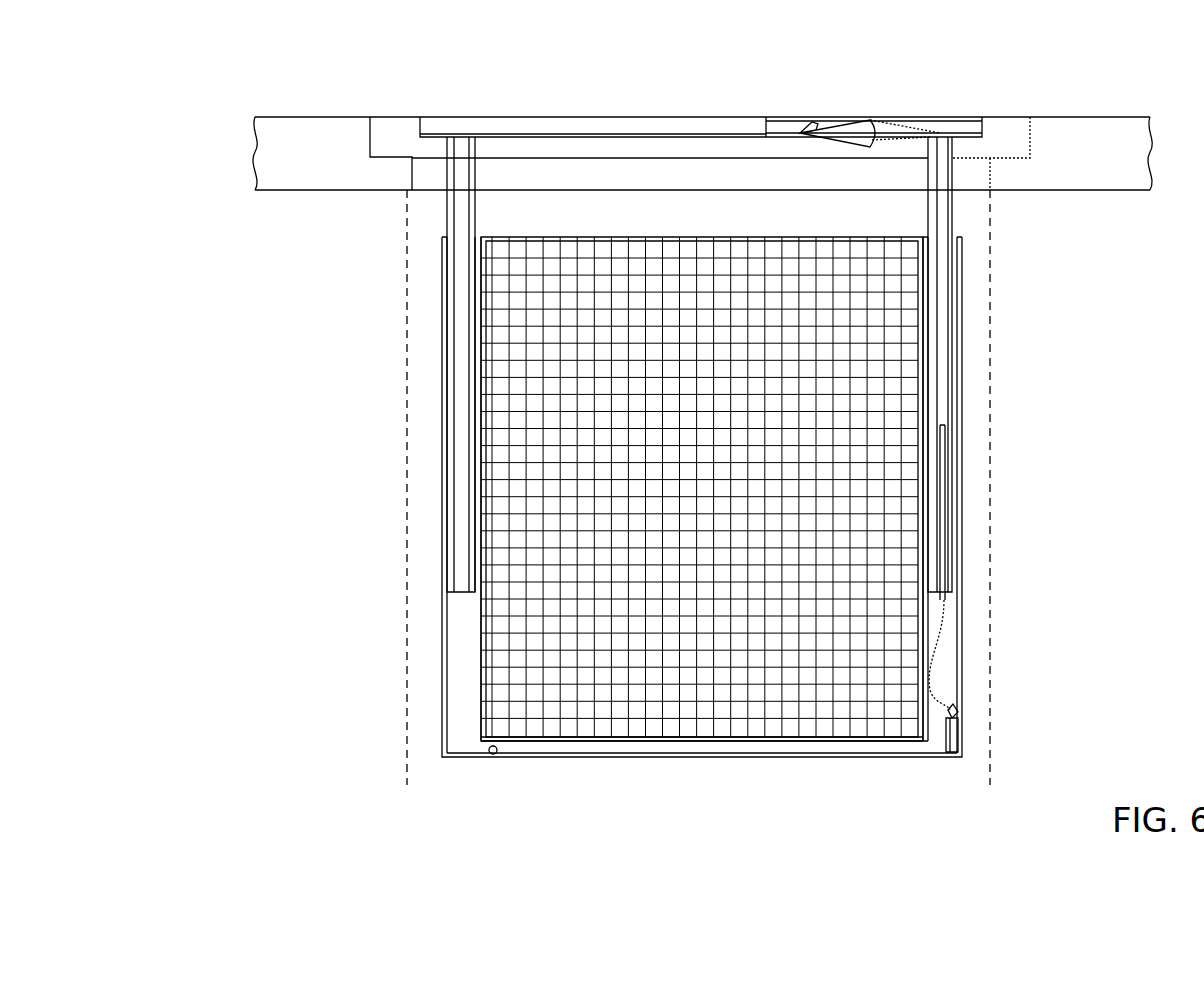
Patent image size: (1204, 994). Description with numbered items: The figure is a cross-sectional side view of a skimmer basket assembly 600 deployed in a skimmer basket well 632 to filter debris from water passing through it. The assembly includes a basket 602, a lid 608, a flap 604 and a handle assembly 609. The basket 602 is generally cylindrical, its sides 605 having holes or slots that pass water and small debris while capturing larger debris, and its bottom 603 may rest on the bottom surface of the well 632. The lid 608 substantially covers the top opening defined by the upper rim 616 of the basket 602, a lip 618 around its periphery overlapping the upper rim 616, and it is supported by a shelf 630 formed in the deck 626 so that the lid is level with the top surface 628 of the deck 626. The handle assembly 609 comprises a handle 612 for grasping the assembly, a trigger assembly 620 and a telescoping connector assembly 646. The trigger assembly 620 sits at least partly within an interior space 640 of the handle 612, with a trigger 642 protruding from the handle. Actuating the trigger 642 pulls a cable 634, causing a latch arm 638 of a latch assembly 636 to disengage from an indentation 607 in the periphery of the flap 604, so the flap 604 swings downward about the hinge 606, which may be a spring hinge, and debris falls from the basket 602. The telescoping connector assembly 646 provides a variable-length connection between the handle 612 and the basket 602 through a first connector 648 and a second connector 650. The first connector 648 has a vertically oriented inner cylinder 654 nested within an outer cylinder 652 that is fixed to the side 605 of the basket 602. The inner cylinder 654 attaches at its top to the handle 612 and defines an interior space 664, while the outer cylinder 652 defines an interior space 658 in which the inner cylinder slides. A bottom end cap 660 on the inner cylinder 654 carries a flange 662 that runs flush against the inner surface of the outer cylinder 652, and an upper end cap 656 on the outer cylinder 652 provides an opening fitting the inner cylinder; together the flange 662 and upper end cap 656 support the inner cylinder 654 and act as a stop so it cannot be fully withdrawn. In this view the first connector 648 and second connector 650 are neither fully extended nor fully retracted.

The skimmer basket assembly 600 is at (276, 68).
The basket 602 is at (512, 355).
The bottom 603 is at (697, 770).
The flap 604 is at (818, 753).
The sides 605 is at (440, 660).
The hinge 606 is at (493, 754).
The indentation 607 is at (936, 750).
The lid 608 is at (1003, 130).
The handle assembly 609 is at (492, 90).
The handle 612 is at (570, 120).
The upper rim 616 is at (668, 238).
The lip 618 is at (392, 128).
The trigger assembly 620 is at (850, 103).
The deck 626 is at (302, 170).
The top surface 628 is at (345, 117).
The shelf 630 is at (990, 166).
The skimmer basket well 632 is at (412, 492).
The cable 634 is at (932, 626).
The latch assembly 636 is at (960, 715).
The latch arm 638 is at (950, 725).
The interior space 640 is at (940, 125).
The trigger 642 is at (835, 128).
The telescoping connector assembly 646 is at (968, 230).
The first connector 648 is at (973, 430).
The second connector 650 is at (430, 212).
The outer cylinder 652 is at (958, 637).
The inner cylinder 654 is at (953, 215).
The upper end cap 656 is at (927, 237).
The interior space 658 is at (943, 677).
The bottom end cap 660 is at (938, 593).
The flange 662 is at (950, 598).
The interior space 664 is at (935, 401).